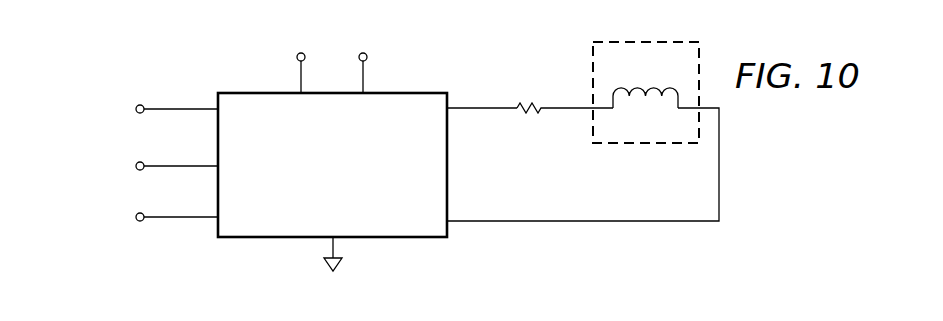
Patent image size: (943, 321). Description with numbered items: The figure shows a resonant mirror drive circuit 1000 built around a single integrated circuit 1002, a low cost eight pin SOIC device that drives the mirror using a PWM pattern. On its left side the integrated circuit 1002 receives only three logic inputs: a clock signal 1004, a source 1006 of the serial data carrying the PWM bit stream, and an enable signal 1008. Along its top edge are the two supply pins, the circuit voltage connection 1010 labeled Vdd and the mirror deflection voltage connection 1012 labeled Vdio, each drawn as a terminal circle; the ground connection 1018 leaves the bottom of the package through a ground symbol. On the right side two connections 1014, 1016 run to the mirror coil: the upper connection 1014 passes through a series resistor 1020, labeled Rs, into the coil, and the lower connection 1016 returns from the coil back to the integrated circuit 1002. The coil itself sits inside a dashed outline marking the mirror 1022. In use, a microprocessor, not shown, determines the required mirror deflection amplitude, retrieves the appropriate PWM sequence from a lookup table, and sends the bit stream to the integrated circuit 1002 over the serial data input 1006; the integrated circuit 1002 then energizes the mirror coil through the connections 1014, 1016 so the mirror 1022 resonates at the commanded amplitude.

The resonant mirror drive circuit 1000 is at (768, 203).
The integrated circuit 1002 is at (395, 239).
The clock signal 1004 is at (192, 108).
The source of the serial data 1006 is at (192, 165).
The enable signal 1008 is at (192, 219).
The VDD supply pin 1010 is at (300, 78).
The VDIO supply pin 1012 is at (364, 78).
The connection to the mirror coil 1014 is at (474, 107).
The connection to the mirror coil 1016 is at (474, 222).
The ground connection 1018 is at (325, 263).
The series resistor Rs 1020 is at (562, 110).
The resonant mirror coil 1022 is at (657, 144).